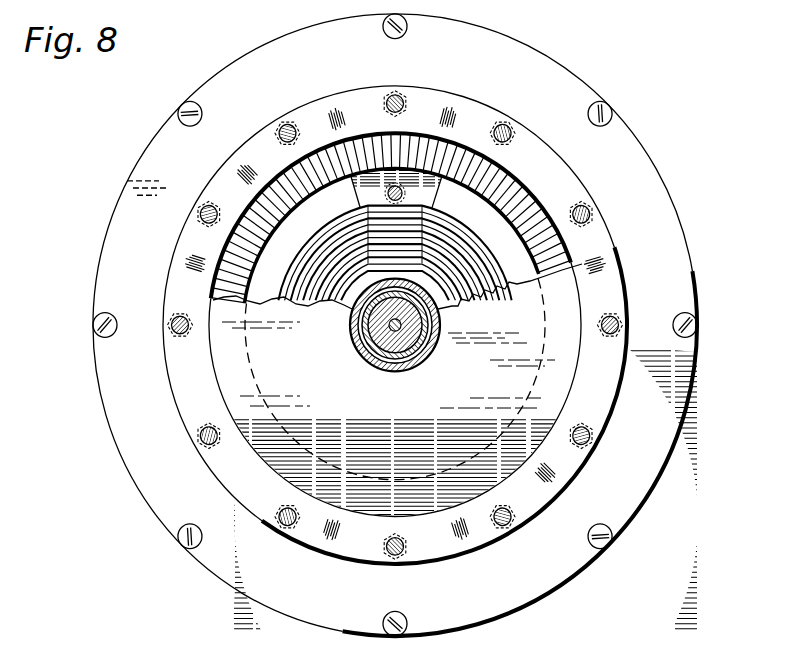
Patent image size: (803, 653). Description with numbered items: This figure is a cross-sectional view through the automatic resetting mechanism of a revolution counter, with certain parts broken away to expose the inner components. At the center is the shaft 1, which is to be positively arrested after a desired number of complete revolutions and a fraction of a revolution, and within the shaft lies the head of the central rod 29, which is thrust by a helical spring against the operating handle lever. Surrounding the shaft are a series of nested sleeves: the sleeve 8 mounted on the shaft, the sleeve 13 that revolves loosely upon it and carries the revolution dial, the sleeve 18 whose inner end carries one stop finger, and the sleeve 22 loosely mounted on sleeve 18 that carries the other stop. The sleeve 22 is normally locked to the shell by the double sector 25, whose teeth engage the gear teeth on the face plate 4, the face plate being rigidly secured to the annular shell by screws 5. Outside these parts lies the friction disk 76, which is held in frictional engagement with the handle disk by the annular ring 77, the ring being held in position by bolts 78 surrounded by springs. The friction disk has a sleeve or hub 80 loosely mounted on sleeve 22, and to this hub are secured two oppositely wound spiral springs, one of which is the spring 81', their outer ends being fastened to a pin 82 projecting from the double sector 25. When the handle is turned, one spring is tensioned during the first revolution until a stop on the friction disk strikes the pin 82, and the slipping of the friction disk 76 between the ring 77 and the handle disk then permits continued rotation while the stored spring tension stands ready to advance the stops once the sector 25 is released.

The shaft 1 is at (402, 348).
The face plate 4 is at (667, 193).
The screws 5 is at (697, 321).
The sleeve 8 is at (378, 353).
The sleeve 13 is at (363, 338).
The sleeve 18 is at (353, 328).
The sleeve 22 is at (420, 360).
The double sector 25 is at (418, 202).
The central rod 29 is at (438, 343).
The friction disk 76 is at (563, 377).
The annular ring 77 is at (570, 460).
The bolts 78 is at (593, 220).
The sleeve or hub 80 is at (453, 308).
The spiral spring 81' is at (483, 206).
The pin 82 is at (380, 203).